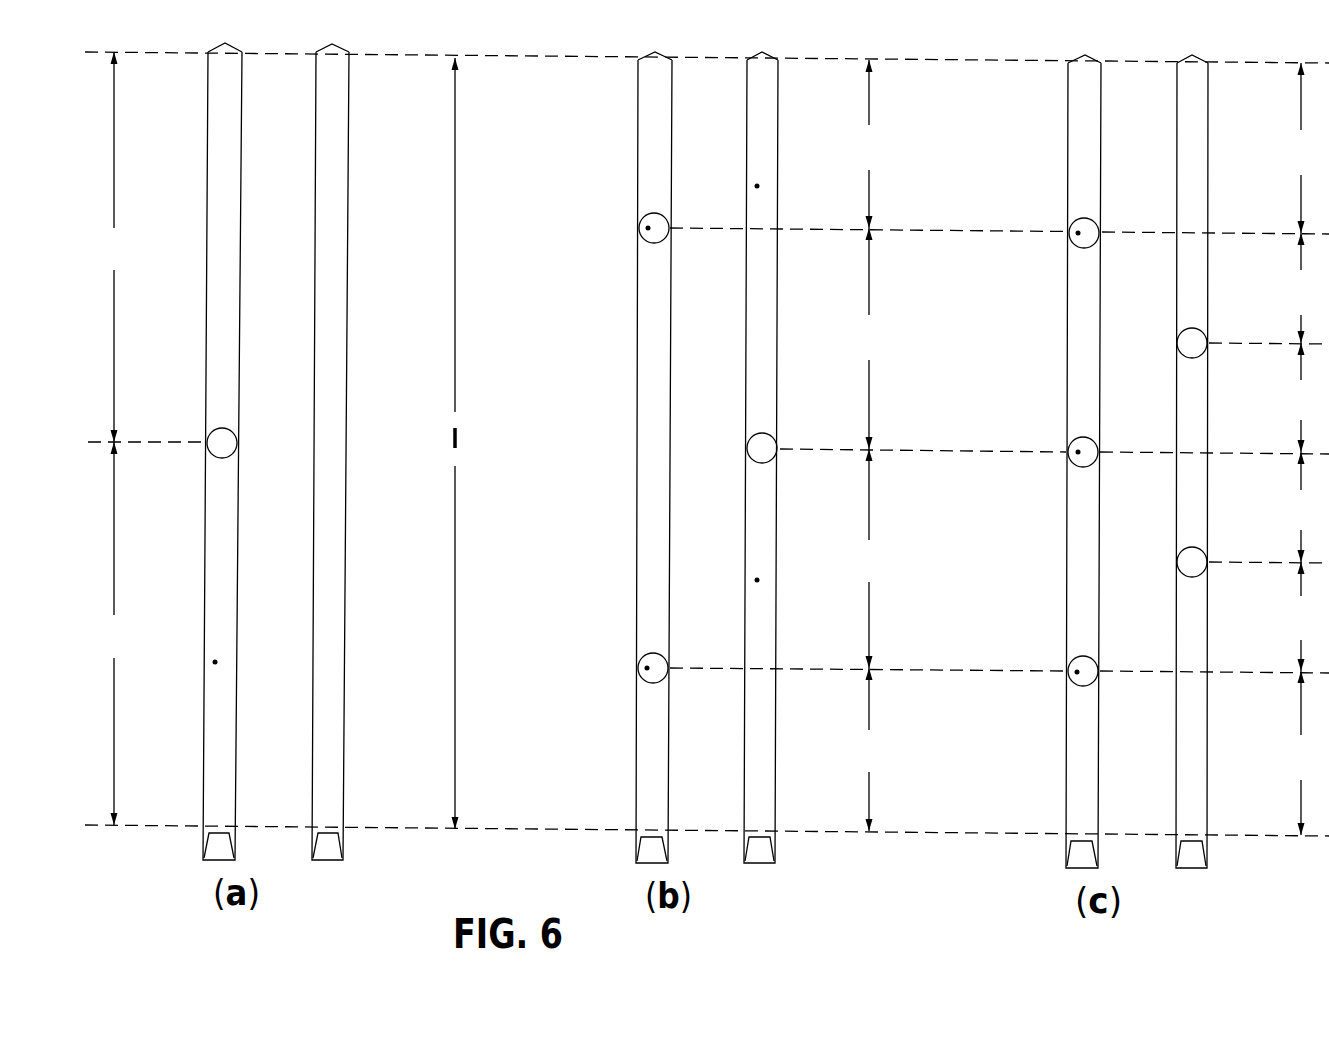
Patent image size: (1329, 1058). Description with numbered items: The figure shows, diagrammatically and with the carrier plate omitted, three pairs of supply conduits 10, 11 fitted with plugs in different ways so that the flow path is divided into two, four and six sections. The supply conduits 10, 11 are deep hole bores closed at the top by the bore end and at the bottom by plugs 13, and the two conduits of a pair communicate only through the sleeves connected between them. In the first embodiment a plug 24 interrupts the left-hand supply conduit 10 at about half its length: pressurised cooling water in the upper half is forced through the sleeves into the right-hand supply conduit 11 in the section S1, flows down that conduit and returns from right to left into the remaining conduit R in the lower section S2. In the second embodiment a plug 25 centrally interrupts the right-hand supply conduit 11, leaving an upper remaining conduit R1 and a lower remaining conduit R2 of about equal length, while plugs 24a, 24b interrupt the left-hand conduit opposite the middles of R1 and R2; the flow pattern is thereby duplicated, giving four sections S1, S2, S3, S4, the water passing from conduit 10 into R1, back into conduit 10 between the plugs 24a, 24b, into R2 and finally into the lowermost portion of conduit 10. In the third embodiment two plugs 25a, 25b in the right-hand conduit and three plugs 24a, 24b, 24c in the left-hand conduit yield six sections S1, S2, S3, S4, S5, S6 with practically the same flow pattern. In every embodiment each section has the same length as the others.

The supply conduit 10 is at (218, 87).
The supply conduit 11 is at (339, 89).
The plug 13 is at (224, 848).
The plug 24 is at (227, 443).
The plug 24a is at (638, 218).
The plug 24b is at (637, 658).
The plug 24c is at (1068, 442).
The plug 25 is at (755, 448).
The plug 25a is at (1187, 343).
The plug 25b is at (1186, 562).
The remaining conduit R is at (213, 663).
The upper remaining conduit R1 is at (755, 185).
The lower remaining conduit R2 is at (755, 581).
The section S1 is at (708, 247).
The section S2 is at (706, 526).
The section S3 is at (1083, 505).
The section S4 is at (1084, 641).
The section S5 is at (1300, 616).
The section S6 is at (1300, 753).